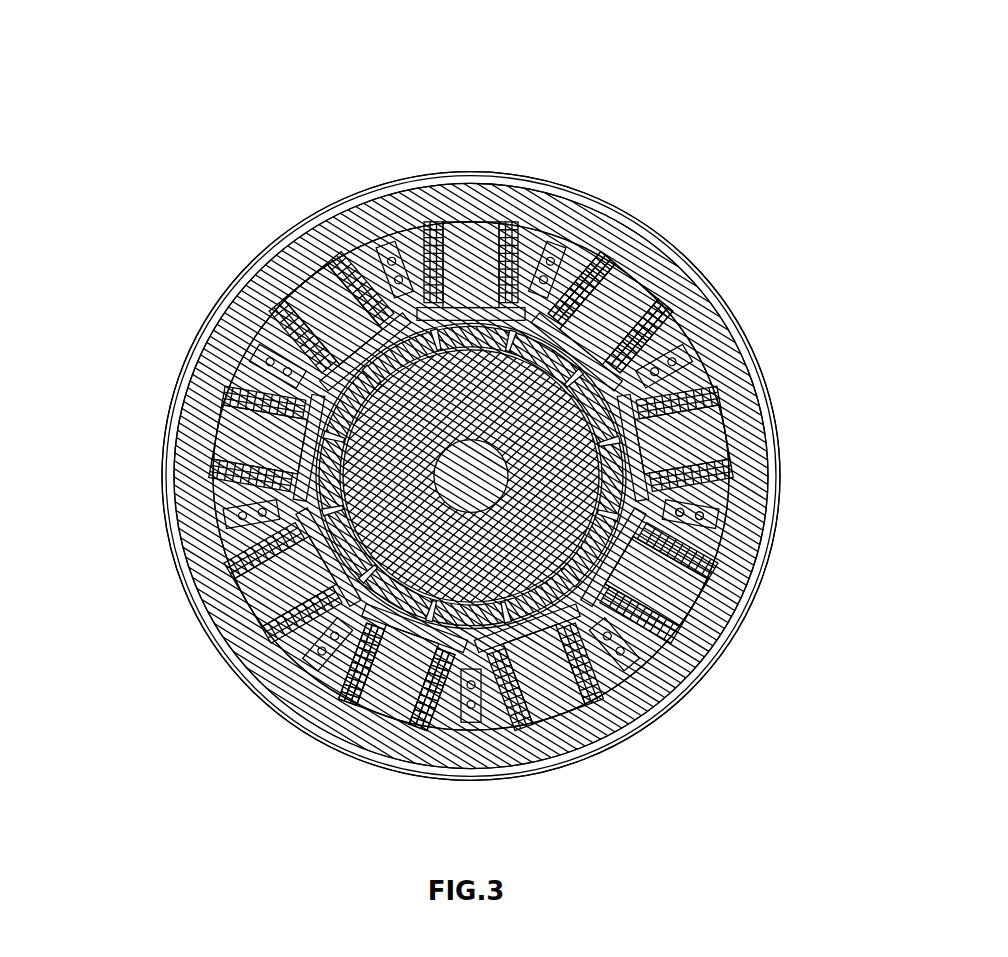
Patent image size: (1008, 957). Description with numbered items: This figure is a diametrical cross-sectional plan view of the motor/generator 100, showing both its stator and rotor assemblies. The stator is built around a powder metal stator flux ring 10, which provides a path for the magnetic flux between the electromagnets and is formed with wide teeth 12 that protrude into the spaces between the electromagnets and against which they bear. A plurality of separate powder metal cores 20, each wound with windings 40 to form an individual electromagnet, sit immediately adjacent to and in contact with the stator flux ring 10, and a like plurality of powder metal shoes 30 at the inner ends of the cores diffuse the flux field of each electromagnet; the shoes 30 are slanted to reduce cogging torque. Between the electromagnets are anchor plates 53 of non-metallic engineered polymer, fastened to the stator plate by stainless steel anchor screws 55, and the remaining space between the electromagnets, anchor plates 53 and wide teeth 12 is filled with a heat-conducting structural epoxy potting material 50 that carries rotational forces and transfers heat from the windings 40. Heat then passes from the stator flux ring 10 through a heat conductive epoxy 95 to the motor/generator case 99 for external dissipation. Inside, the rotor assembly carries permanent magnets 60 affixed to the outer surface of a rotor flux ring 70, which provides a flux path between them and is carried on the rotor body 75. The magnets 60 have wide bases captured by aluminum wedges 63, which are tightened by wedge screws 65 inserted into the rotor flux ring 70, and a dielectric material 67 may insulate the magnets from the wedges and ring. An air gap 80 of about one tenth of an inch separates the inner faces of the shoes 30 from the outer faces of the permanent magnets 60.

The motor/generator 100 is at (474, 55).
The stator flux ring 10 is at (485, 197).
The wide teeth 12 is at (537, 220).
The powder metal cores 20 is at (618, 292).
The shoes 30 is at (720, 540).
The windings 40 is at (617, 252).
The structural epoxy potting material 50 is at (665, 332).
The anchor plates 53 is at (717, 510).
The anchor screws 55 is at (703, 515).
The permanent magnets 60 is at (725, 627).
The aluminum wedges 63 is at (687, 678).
The wedge screws 65 is at (630, 703).
The dielectric material 67 is at (230, 303).
The rotor flux ring 70 is at (340, 600).
The rotor body 75 is at (413, 387).
The air gap 80 is at (392, 650).
The heat conductive epoxy 95 is at (163, 463).
The motor/generator case 99 is at (172, 393).